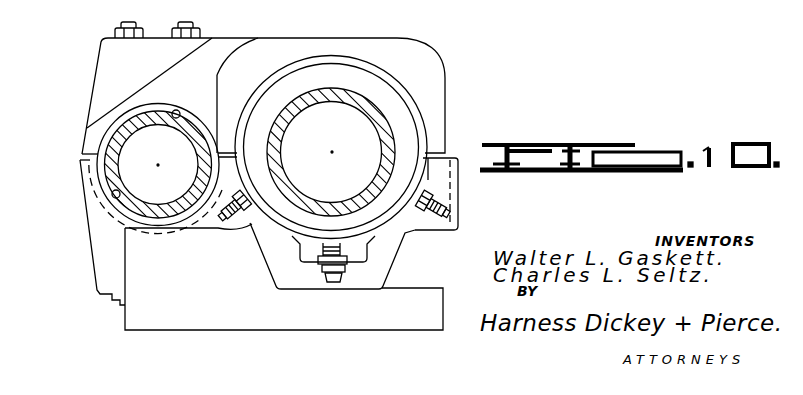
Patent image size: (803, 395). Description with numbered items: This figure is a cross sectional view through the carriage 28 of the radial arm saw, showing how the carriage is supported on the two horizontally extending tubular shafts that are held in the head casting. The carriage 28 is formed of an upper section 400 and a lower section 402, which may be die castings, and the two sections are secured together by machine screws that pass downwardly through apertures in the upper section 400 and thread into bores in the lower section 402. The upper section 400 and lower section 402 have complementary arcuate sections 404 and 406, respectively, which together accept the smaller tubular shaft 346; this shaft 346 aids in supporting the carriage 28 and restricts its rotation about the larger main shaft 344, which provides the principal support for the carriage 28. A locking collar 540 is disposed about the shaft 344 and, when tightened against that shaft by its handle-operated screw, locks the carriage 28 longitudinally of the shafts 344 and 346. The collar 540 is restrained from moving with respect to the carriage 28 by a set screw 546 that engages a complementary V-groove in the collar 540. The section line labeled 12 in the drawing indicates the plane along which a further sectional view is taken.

The section line 12- 12 is at (125, 6).
The carriage 28 is at (449, 71).
The tubular shaft 344 is at (370, 104).
The tubular shaft 346 is at (111, 134).
The upper section 400 is at (394, 54).
The lower section 402 is at (108, 269).
The arcuate section 404 is at (178, 111).
The arcuate section 406 is at (113, 195).
The locking collar 540 is at (405, 129).
The set screw 546 is at (222, 213).